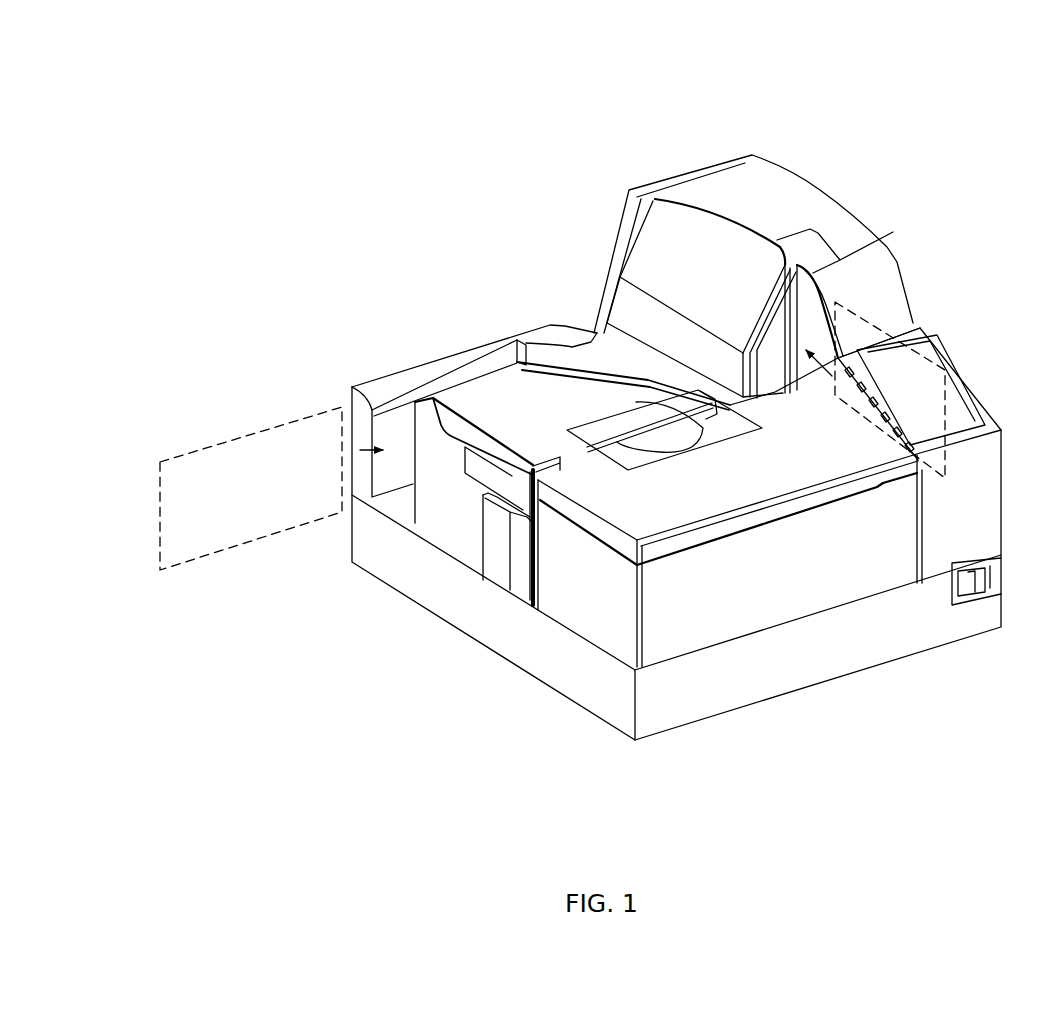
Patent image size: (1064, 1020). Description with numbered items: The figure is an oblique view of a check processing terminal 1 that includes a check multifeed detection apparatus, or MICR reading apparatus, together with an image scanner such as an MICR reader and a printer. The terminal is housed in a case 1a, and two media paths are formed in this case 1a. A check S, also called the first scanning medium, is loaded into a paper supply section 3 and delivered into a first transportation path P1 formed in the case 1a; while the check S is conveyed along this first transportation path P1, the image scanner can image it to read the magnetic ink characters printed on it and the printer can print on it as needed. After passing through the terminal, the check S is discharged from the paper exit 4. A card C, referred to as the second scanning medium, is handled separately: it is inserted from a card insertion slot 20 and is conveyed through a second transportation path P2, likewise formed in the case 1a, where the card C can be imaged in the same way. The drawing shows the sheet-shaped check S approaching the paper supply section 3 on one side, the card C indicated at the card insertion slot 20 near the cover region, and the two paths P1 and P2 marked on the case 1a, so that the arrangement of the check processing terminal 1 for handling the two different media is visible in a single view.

The check processing terminal 1 is at (590, 155).
The case 1a is at (813, 203).
The paper supply section 3 is at (452, 380).
The paper exit 4 is at (525, 562).
The card insertion slot 20 is at (790, 298).
The first transportation path P1 is at (590, 331).
The second transportation path P2 is at (703, 187).
The check S is at (256, 432).
The card C is at (920, 328).